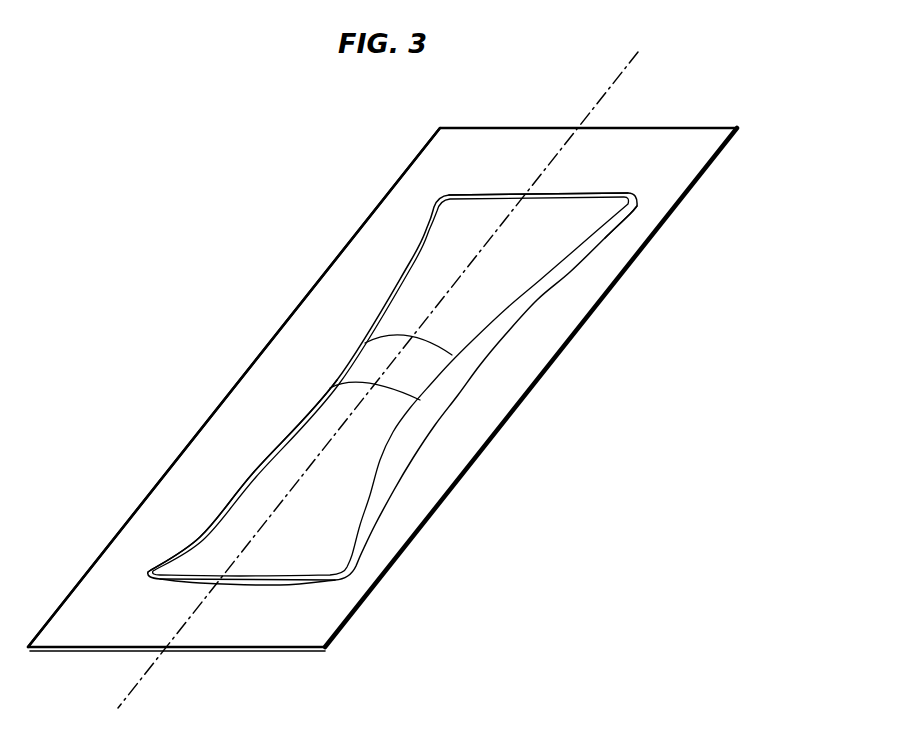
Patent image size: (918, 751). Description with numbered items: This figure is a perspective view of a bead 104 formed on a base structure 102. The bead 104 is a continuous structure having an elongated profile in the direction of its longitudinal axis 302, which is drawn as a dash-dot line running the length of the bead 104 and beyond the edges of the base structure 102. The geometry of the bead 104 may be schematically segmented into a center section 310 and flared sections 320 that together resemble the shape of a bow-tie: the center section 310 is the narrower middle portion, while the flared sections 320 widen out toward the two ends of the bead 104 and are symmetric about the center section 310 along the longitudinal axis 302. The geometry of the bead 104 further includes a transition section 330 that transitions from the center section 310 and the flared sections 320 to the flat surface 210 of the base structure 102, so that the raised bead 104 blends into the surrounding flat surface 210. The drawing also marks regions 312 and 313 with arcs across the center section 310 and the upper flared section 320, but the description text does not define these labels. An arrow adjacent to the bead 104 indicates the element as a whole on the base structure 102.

The base structure 102 is at (367, 602).
The bead 104 is at (582, 296).
The flat surface 210 is at (360, 246).
The longitudinal axis 302 is at (143, 675).
The center section 310 is at (418, 372).
The first bend section 312 is at (359, 387).
The second bend section 313 is at (403, 336).
The flared sections 320 is at (572, 222).
The transition section 330 is at (597, 193).